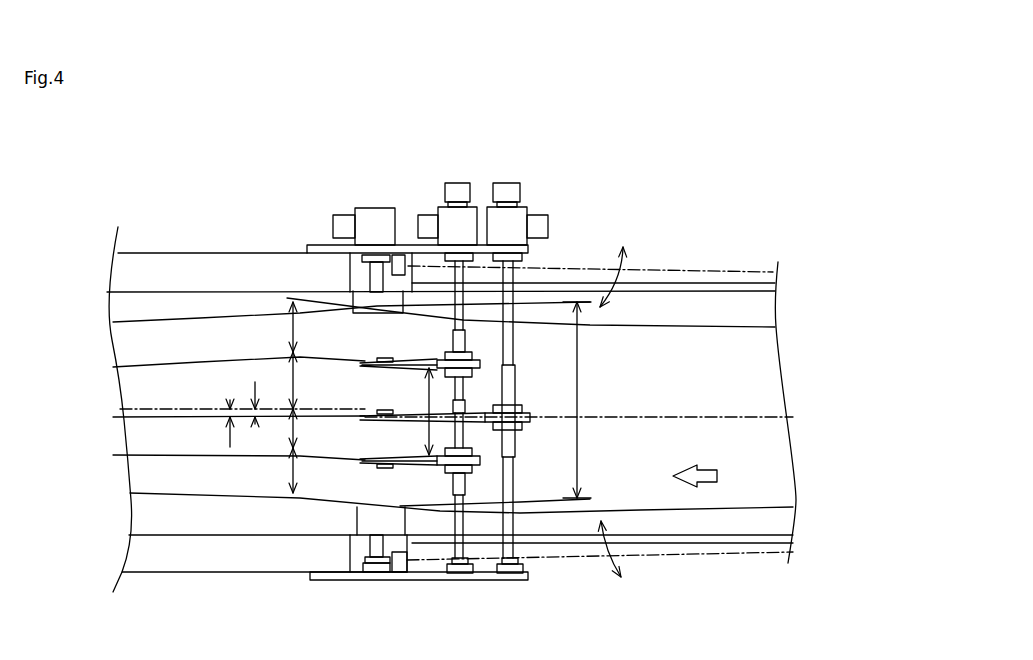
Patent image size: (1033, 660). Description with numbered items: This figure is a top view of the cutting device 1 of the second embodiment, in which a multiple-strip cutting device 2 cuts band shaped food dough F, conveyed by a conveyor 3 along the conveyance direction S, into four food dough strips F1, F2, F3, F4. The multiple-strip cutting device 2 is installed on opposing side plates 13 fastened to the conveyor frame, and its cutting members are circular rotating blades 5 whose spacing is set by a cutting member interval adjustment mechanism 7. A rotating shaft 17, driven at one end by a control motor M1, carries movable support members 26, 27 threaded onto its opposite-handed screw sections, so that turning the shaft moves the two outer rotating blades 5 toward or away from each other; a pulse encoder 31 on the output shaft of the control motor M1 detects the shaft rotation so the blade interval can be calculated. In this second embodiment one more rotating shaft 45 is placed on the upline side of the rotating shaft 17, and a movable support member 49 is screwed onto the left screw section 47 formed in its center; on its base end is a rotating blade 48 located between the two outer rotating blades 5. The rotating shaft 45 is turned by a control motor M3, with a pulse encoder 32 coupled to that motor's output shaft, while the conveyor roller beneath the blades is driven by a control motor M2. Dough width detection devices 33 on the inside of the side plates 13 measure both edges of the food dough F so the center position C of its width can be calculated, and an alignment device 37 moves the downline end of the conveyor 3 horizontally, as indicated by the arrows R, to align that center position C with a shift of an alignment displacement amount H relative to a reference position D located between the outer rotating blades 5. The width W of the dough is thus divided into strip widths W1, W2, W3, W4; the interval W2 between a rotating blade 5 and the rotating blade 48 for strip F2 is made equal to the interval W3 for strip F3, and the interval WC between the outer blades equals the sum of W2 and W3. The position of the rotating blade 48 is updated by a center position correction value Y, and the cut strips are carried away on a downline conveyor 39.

The cutting device 1 is at (235, 186).
The multiple-strip cutting device 2 is at (325, 190).
The conveyor 3 is at (733, 538).
The rotating blades 5 is at (368, 367).
The cutting member interval adjustment mechanism 7 is at (537, 522).
The side plates 13 is at (326, 247).
The rotating shaft 17 is at (474, 445).
The movable support member 26 is at (473, 462).
The movable support member 27 is at (473, 362).
The pulse encoder 31 is at (458, 188).
The pulse encoder 32 is at (507, 188).
The dough width detection devices 33 is at (400, 256).
The alignment device 37 is at (650, 565).
The conveyor 39 is at (163, 268).
The rotating shaft 45 is at (528, 445).
The left screw section 47 is at (509, 381).
The rotating blade 48 is at (368, 419).
The movable support member 49 is at (527, 424).
The control motor M1 is at (473, 222).
The control motor M2 is at (372, 218).
The control motor M3 is at (520, 216).
The food dough F is at (667, 365).
The food dough strip F1 is at (138, 483).
The food dough strip F2 is at (133, 440).
The food dough strip F3 is at (125, 388).
The food dough strip F4 is at (127, 347).
The center position C is at (757, 420).
The conveyance direction S is at (740, 487).
The arrows R is at (607, 242).
The reference position D is at (475, 410).
The sheet width W is at (572, 400).
The strip width W1 is at (282, 470).
The width dimension W2 is at (281, 428).
The width dimension W3 is at (282, 380).
The strip width W4 is at (294, 327).
The interval WC is at (418, 411).
The alignment displacement amount H is at (243, 403).
The center position correction value Y is at (218, 423).